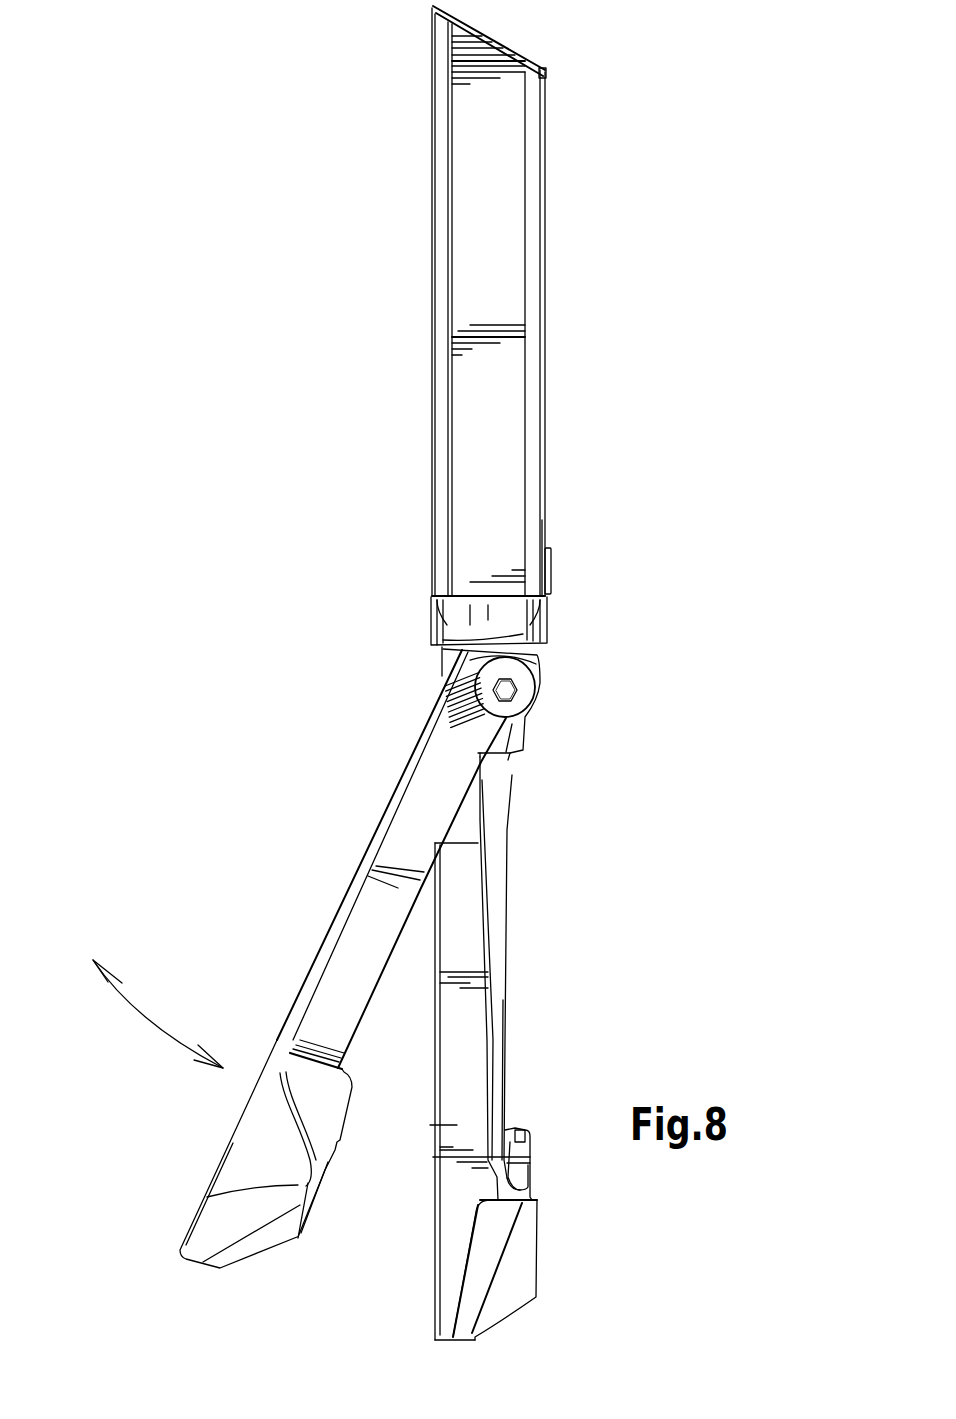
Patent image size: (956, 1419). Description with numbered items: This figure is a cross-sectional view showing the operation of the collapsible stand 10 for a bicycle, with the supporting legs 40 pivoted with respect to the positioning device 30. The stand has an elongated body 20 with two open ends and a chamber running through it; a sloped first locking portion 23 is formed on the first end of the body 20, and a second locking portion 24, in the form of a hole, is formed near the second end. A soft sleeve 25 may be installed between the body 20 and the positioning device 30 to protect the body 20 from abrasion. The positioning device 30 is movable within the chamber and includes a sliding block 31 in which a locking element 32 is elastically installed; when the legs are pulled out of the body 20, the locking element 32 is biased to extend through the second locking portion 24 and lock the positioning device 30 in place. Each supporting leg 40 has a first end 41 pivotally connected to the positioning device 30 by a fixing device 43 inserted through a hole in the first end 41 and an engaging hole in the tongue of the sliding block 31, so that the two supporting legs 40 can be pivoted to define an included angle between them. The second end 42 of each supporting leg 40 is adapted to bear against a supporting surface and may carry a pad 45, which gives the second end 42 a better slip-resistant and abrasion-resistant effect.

The collapsible stand 10 is at (708, 104).
The body 20 is at (543, 302).
The sleeve 25 is at (518, 308).
The first locking portion 23 is at (545, 73).
The second locking portion 24 is at (546, 540).
The locking element 32 is at (551, 572).
The positioning device 30 is at (604, 686).
The sliding block 31 is at (515, 614).
The first end 41 is at (468, 663).
The fixing device 43 is at (512, 708).
The supporting leg 40 is at (340, 922).
The second end 42 is at (255, 1130).
The pad 45 is at (255, 1230).